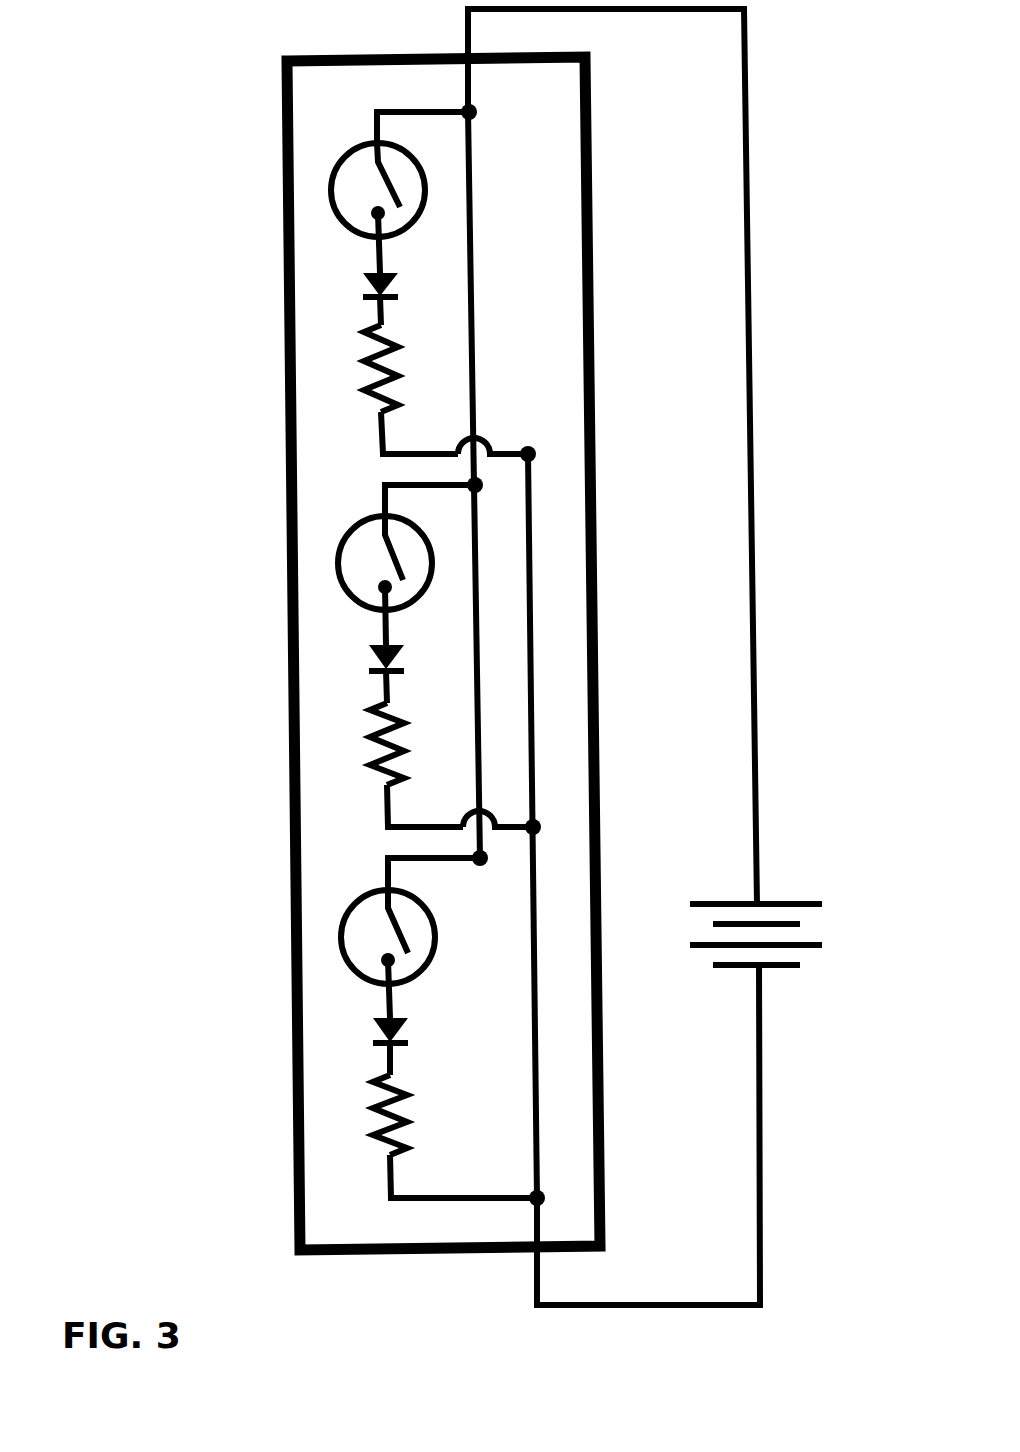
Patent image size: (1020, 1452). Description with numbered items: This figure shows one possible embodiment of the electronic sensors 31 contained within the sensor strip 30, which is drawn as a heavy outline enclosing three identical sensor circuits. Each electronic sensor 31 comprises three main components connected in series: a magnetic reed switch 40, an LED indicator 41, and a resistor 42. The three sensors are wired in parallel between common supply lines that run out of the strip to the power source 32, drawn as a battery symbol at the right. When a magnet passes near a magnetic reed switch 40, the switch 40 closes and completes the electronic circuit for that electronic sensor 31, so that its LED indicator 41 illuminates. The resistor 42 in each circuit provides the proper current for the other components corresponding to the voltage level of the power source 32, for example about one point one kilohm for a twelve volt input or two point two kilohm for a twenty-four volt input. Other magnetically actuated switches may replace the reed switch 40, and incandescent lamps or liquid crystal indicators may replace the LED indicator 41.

The sensor strip 30 is at (276, 816).
The electronic sensor 31 is at (435, 655).
The power source 32 is at (778, 881).
The magnetic reed switch 40 is at (316, 175).
The LED indicator 41 is at (334, 275).
The resistor 42 is at (336, 364).